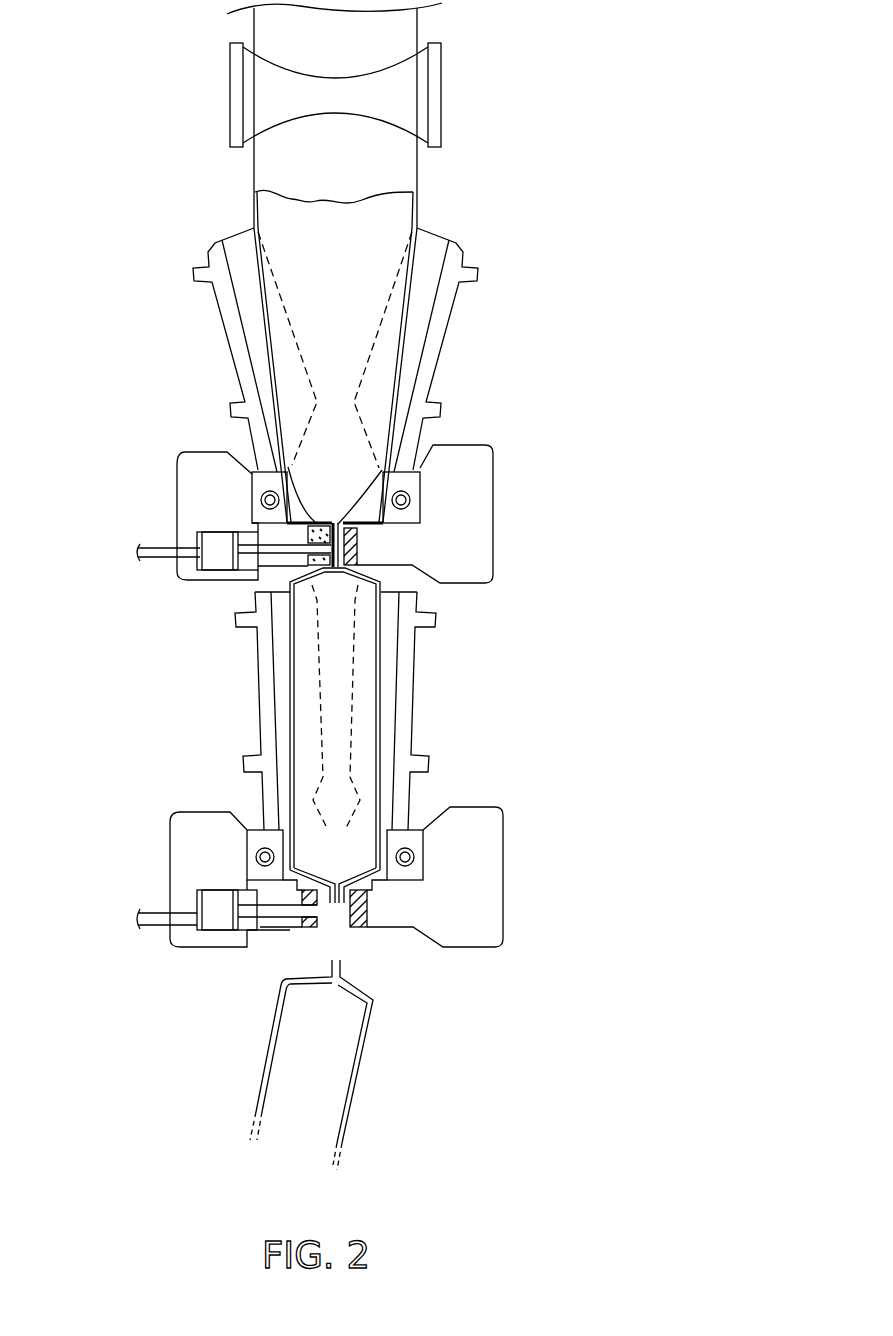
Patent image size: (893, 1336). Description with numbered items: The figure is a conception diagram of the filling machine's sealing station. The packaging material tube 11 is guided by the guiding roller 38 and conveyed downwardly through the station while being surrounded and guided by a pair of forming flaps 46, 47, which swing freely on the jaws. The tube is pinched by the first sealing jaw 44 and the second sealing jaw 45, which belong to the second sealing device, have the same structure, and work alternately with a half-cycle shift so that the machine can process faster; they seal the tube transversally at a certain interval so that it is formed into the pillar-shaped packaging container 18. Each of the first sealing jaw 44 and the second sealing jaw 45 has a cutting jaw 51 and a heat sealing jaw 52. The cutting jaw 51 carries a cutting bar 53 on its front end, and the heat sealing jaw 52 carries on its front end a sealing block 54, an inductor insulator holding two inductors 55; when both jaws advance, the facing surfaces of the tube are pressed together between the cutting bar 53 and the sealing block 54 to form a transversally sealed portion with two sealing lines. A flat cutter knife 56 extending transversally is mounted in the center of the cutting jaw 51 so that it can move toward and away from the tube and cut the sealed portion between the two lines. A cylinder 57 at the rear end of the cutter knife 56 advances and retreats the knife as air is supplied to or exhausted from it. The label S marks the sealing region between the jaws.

The packaging-material tube 11 is at (407, 167).
The guiding roller 38 is at (442, 83).
The forming flap 46 is at (213, 247).
The forming flap 47 is at (463, 248).
The first sealing jaw 44 is at (510, 426).
The second sealing jaw 45 is at (508, 782).
The cutting jaw 51 is at (163, 480).
The heat sealing jaw 52 is at (508, 479).
The cutting bar 53 is at (290, 527).
The sealing block 54 is at (358, 551).
The inductor 55 is at (358, 543).
The cutter knife 56 is at (265, 572).
The cylinder 57 is at (212, 531).
The packaging container 18 is at (383, 740).
The space S is at (410, 469).